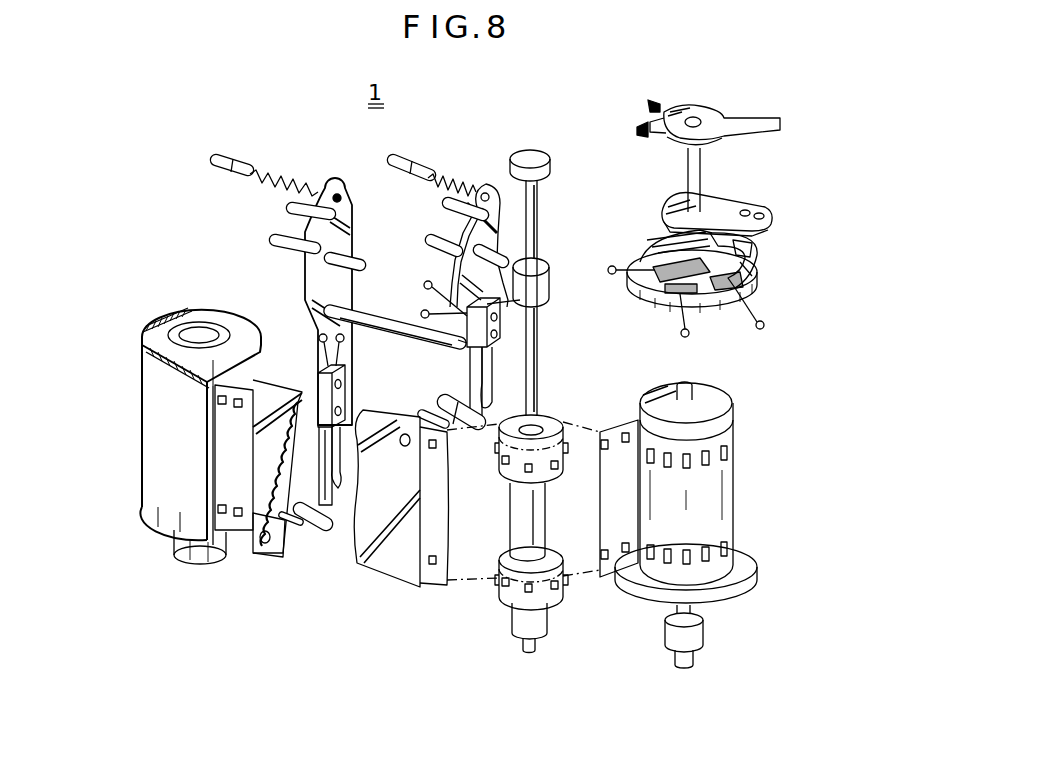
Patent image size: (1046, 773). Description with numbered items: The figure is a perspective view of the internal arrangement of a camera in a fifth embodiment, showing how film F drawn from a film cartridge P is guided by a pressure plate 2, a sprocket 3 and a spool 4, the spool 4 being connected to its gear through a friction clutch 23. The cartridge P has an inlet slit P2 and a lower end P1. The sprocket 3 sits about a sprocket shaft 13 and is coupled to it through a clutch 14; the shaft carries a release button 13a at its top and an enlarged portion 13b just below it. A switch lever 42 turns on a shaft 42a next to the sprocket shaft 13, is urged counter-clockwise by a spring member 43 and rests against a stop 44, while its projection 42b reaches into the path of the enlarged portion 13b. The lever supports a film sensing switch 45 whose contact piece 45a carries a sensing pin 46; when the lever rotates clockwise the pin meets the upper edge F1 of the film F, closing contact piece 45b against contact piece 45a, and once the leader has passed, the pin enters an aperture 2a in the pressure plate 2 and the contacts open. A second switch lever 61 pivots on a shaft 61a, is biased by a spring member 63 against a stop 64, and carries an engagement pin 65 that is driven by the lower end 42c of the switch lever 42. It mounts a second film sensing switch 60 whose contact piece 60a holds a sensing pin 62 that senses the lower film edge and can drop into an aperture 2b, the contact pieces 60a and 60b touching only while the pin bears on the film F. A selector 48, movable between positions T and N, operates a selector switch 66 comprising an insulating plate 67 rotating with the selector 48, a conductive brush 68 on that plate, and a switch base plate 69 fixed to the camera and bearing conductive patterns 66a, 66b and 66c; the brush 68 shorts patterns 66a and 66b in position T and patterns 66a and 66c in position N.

The pressure plate 2 is at (392, 572).
The aperture 2a is at (410, 445).
The aperture 2b is at (266, 545).
The sprocket 3 is at (548, 425).
The spool 4 is at (712, 402).
The sprocket shaft 13 is at (538, 226).
The release button 13a is at (531, 156).
The enlarged portion 13b is at (551, 284).
The clutch 14 is at (548, 622).
The friction clutch 23 is at (666, 640).
The switch lever 42 is at (487, 184).
The shaft 42a is at (437, 242).
The projection 42b is at (500, 312).
The lower end 42c is at (462, 349).
The spring member 43 is at (440, 170).
The stop 44 is at (448, 207).
The film sensing switch 45 is at (499, 326).
The contact piece 45a is at (494, 378).
The contact piece 45b is at (484, 357).
The sensing pin 46 is at (456, 410).
The selector 48 is at (754, 122).
The second film sensing switch 60 is at (340, 392).
The contact piece 60a is at (327, 457).
The contact piece 60b is at (338, 443).
The switch lever 61 is at (338, 190).
The shaft 61a is at (275, 243).
The sensing pin 62 is at (318, 533).
The spring member 63 is at (282, 185).
The stop 64 is at (292, 210).
The engagement pin 65 is at (380, 325).
The selector switch 66 is at (785, 226).
The conductive pattern 66a is at (668, 268).
The conductive pattern 66b is at (722, 290).
The conductive pattern 66c is at (670, 292).
The insulating plate 67 is at (735, 208).
The conductive brush 68 is at (752, 256).
The switch base plate 69 is at (748, 273).
The film F is at (236, 396).
The upper edge F1 is at (434, 447).
The film cartridge P is at (188, 318).
The cartridge spool end P1 is at (206, 553).
The inlet slit P2 is at (232, 334).